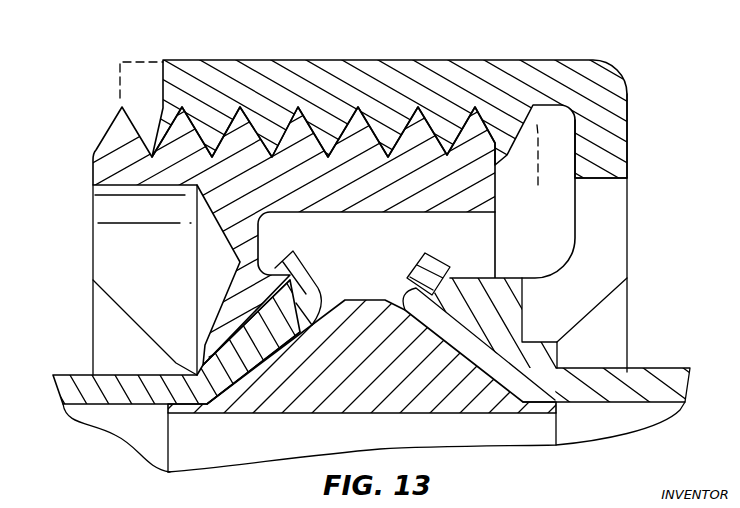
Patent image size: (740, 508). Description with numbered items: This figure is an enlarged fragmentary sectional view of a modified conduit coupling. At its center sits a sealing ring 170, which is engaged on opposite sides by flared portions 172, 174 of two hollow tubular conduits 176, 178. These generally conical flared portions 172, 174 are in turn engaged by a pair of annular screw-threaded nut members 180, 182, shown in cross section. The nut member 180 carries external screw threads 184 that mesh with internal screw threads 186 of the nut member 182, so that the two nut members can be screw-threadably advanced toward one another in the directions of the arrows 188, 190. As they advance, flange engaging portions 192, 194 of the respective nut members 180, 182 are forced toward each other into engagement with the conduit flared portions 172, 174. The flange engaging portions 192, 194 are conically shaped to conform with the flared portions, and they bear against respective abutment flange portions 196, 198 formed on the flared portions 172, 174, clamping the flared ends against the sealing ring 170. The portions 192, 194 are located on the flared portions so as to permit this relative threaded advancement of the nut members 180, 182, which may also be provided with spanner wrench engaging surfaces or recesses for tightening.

The sealing ring 170 is at (310, 400).
The flared portion 172 is at (233, 395).
The flared portion 174 is at (495, 367).
The hollow tubular conduit 176 is at (65, 378).
The hollow tubular conduit 178 is at (688, 383).
The screw-threaded nut member 180 is at (200, 248).
The screw-threaded nut member 182 is at (617, 207).
The external screw threads 184 is at (122, 130).
The internal screw threads 186 is at (327, 123).
The arrow 188 is at (114, 280).
The arrow 190 is at (633, 113).
The flange engaging portion 192 is at (237, 330).
The flange engaging portion 194 is at (492, 325).
The abutment flange portion 196 is at (317, 278).
The abutment flange portion 198 is at (412, 278).